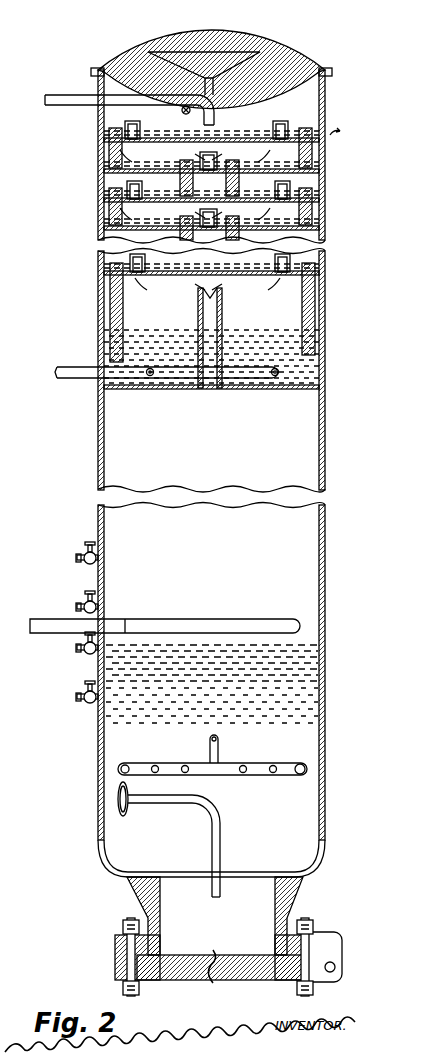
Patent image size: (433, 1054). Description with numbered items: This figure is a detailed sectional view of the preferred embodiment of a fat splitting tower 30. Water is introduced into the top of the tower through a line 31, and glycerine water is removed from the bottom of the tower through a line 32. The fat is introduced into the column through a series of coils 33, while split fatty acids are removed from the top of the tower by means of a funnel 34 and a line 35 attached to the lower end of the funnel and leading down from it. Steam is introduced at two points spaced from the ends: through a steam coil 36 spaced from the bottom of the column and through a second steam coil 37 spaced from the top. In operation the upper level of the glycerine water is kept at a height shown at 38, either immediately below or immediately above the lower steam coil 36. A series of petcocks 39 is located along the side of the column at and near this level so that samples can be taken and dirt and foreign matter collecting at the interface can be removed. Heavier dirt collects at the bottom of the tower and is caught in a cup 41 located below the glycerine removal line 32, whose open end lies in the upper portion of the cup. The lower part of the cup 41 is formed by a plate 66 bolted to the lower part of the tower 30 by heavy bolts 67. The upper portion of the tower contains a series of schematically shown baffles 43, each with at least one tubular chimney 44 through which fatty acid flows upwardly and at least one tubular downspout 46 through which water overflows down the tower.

The splitting tower 30 is at (329, 334).
The line 31 is at (70, 94).
The line 32 is at (222, 861).
The coils 33 is at (303, 776).
The funnel 34 is at (246, 52).
The line 35 is at (182, 112).
The steam coil 36 is at (290, 620).
The second steam coil 37 is at (278, 380).
The upper level of the glycerine water 38 is at (310, 645).
The petcocks 39 is at (76, 562).
The cup 41 is at (212, 984).
The baffles 43 is at (324, 173).
The tubular conduit or chimney 44 is at (283, 122).
The tubular downspout 46 is at (312, 150).
The plate 66 is at (116, 974).
The bolts 67 is at (306, 920).